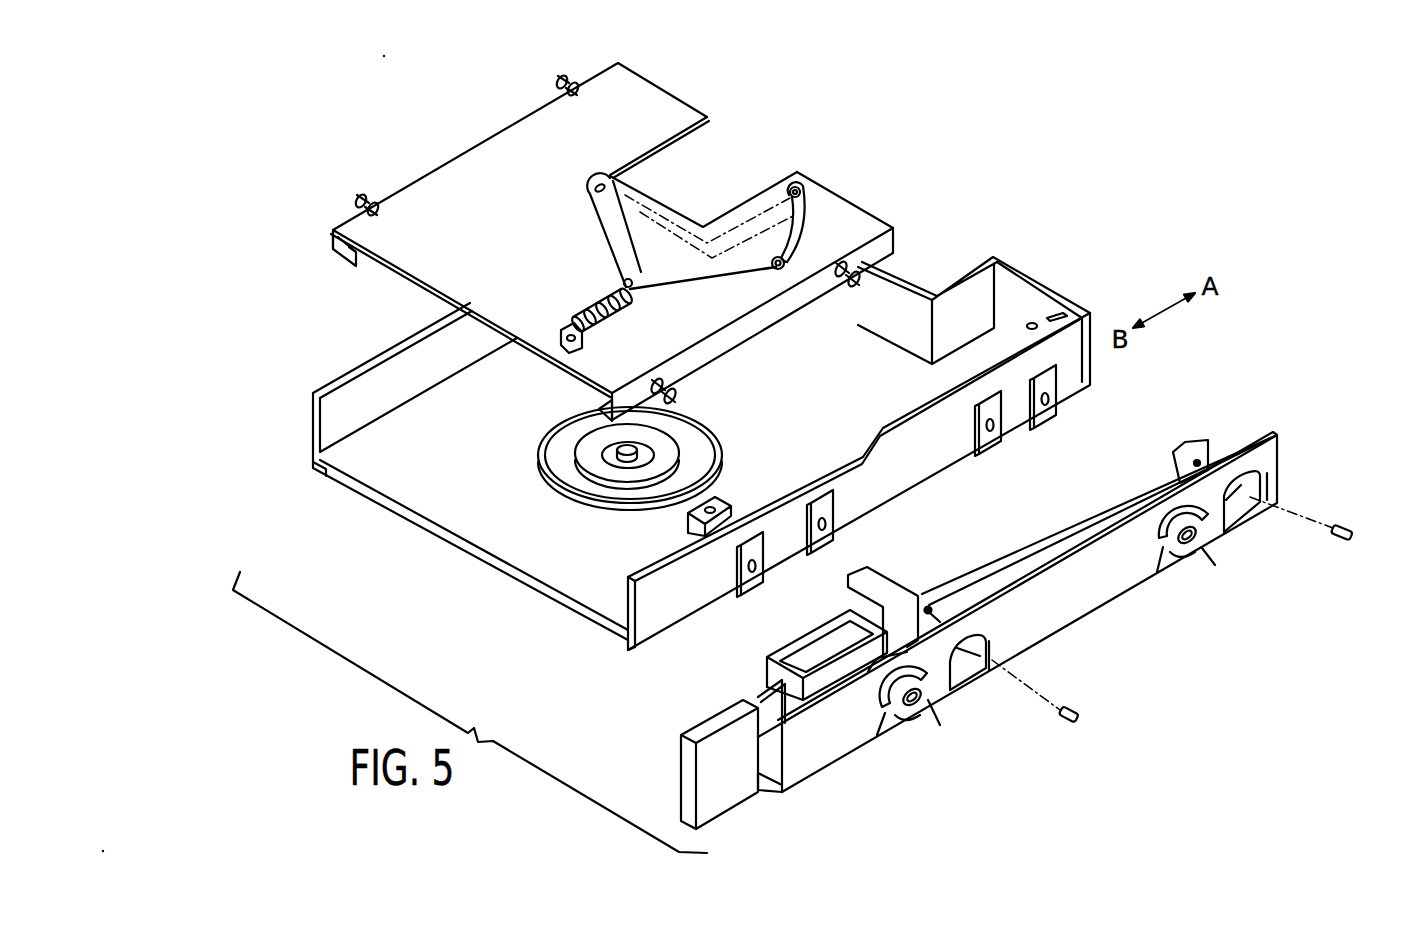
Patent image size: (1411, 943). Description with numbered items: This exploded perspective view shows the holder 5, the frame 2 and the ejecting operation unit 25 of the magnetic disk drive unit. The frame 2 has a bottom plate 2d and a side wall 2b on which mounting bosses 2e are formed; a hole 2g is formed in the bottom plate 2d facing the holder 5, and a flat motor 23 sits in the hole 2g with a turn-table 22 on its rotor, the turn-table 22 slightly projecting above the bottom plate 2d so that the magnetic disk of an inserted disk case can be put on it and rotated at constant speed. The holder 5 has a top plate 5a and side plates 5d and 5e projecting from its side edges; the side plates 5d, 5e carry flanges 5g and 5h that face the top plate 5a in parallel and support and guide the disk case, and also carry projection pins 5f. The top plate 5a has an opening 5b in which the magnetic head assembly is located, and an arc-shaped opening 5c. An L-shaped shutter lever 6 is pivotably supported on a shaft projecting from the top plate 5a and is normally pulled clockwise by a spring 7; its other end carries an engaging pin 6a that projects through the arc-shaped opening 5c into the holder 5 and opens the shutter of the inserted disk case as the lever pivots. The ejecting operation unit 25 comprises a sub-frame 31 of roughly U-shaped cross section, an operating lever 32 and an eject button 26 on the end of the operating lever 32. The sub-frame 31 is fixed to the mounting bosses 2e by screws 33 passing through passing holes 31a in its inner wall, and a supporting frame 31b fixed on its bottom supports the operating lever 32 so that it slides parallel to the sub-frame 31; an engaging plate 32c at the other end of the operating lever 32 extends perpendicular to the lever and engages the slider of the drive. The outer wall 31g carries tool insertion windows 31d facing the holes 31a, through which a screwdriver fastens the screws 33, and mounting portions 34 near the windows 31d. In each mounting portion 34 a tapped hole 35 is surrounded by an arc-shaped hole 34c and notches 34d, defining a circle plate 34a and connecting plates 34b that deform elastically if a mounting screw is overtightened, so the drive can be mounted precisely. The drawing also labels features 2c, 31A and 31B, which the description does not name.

The frame 2 is at (510, 578).
The side wall 2b is at (912, 468).
The positioning hole 2c is at (1035, 320).
The bottom plate 2d is at (445, 496).
The mounting bosses 2e is at (1050, 418).
The hole 2g is at (540, 452).
The holder 5 is at (375, 270).
The top plate 5a is at (455, 185).
The opening 5b is at (700, 130).
The arc-shaped opening 5c is at (800, 208).
The side plate 5d is at (333, 232).
The side plate 5e is at (760, 338).
The projection pins 5f is at (560, 84).
The flange 5g is at (335, 258).
The flange 5h is at (596, 408).
The shutter lever 6 is at (741, 222).
The engaging pin 6a is at (805, 262).
The spring 7 is at (590, 315).
The turn-table 22 is at (665, 465).
The flat motor 23 is at (707, 437).
The ejecting operation unit 25 is at (755, 835).
The eject button 26 is at (690, 778).
The sub-frame 31 is at (1052, 638).
The lever 31A is at (1018, 568).
The bent portion of slide plate 31B is at (760, 773).
The passing holes 31a is at (1218, 447).
The supporting frame 31b is at (812, 632).
The tool insertion windows 31d is at (1242, 505).
The outer wall 31g is at (808, 758).
The operating lever 32 is at (762, 684).
The engaging plate 32c is at (893, 583).
The screws 33 is at (1340, 522).
The mounting portions 34 is at (1222, 557).
The circle plate 34a is at (1207, 563).
The connecting plates 34b is at (1203, 533).
The arc-shaped hole 34c is at (1155, 490).
The notches 34d is at (1175, 555).
The tapped hole 35 is at (1198, 540).